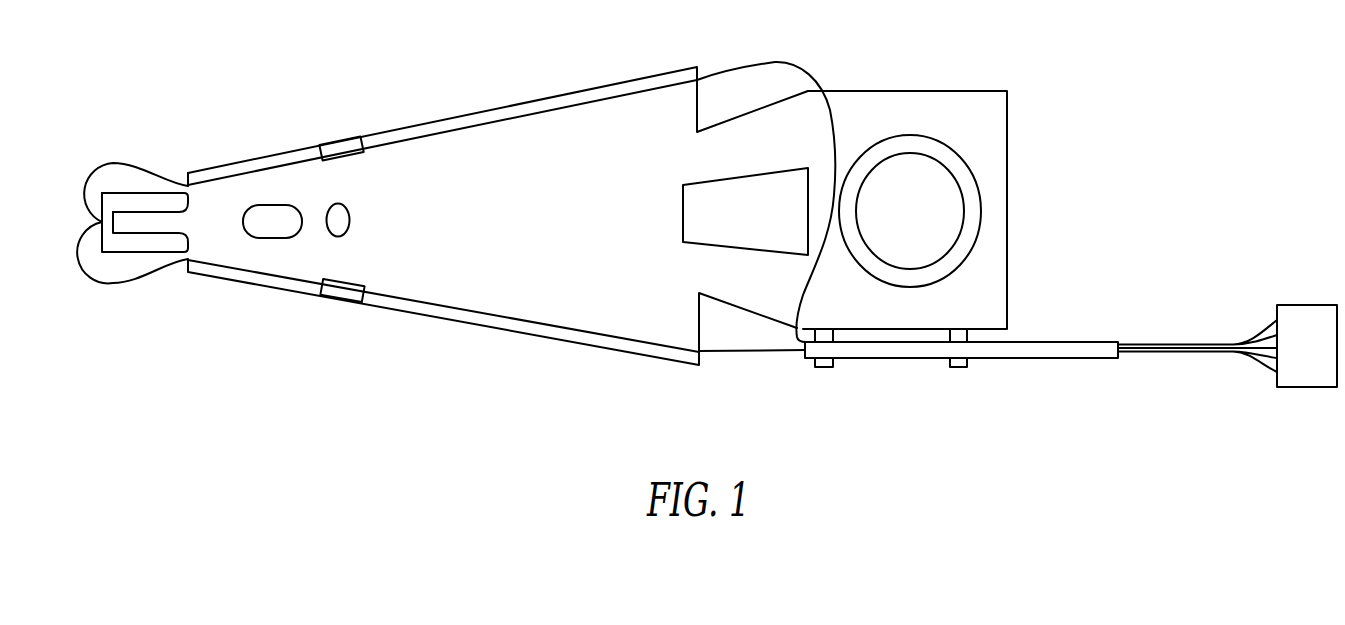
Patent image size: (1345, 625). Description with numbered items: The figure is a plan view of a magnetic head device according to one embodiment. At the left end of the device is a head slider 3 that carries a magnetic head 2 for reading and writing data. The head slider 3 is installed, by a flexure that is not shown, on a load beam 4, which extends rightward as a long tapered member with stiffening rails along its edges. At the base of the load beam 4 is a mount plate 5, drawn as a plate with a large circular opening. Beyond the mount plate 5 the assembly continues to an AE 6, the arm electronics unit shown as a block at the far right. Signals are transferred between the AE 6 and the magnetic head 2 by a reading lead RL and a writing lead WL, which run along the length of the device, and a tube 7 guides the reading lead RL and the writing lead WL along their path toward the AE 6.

The magnetic head 2 is at (105, 242).
The head slider 3 is at (132, 203).
The load beam 4 is at (523, 310).
The mount plate 5 is at (962, 97).
The AE (arm electronics) 6 is at (1308, 378).
The tube 7 is at (1062, 347).
The reading lead RL is at (100, 163).
The writing lead WL is at (97, 280).